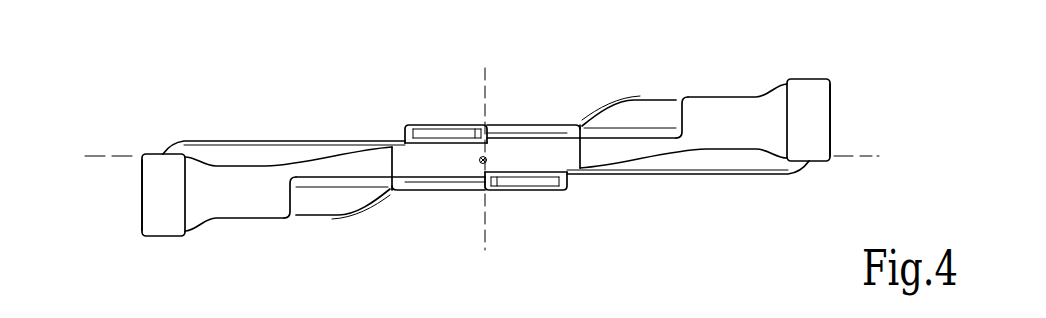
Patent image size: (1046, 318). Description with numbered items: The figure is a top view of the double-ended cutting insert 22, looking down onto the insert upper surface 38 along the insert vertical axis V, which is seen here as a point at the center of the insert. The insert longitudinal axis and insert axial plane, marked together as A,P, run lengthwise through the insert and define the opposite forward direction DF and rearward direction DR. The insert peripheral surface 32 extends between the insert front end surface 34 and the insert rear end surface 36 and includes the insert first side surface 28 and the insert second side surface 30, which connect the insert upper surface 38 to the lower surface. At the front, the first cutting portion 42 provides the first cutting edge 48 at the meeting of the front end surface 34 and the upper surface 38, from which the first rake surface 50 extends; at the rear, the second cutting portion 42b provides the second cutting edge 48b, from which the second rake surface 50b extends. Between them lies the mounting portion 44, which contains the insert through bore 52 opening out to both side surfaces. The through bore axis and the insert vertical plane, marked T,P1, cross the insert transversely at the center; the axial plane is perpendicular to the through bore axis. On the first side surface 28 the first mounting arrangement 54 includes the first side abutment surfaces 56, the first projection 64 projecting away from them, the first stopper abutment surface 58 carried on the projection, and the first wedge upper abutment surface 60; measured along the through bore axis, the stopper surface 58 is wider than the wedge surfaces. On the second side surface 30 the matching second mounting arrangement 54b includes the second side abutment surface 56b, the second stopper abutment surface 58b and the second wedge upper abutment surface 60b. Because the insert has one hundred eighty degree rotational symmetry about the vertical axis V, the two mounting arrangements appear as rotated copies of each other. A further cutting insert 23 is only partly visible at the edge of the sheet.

The cutting insert 22 is at (490, 156).
The fastening clip (next figure) 23 is at (819, 313).
The insert first side surface 28 is at (315, 262).
The insert second side surface 30 is at (252, 124).
The insert peripheral surface 32 is at (613, 153).
The insert front end surface 34 is at (840, 97).
The insert rear end surface 36 is at (134, 216).
The insert upper surface 38 is at (288, 226).
The first cutting portion 42 is at (738, 201).
The second cutting portion 42b is at (190, 247).
The mounting portion 44 is at (421, 105).
The first cutting edge 48 is at (834, 118).
The second cutting edge 48b is at (141, 201).
The first rake surface 50 is at (820, 137).
The second rake surface 50b is at (164, 195).
The insert through bore 52 is at (447, 204).
The first mounting arrangement 54 is at (545, 232).
The second mounting arrangement 54b is at (557, 85).
The first side abutment surface 56 is at (313, 179).
The second side abutment surface 56b is at (428, 142).
The first stopper abutment surface 58 is at (318, 197).
The second stopper abutment surface 58b is at (645, 113).
The first wedge upper abutment surface 60 is at (552, 184).
The second wedge upper abutment surface 60b is at (465, 135).
The first projection 64 is at (386, 216).
The insert vertical axis V is at (488, 158).
The through bore axis and insert vertical plane T,P1 is at (486, 76).
The insert longitudinal axis and insert axial plane A,P is at (861, 155).
The rearward direction DR is at (110, 173).
The forward direction DF is at (892, 175).